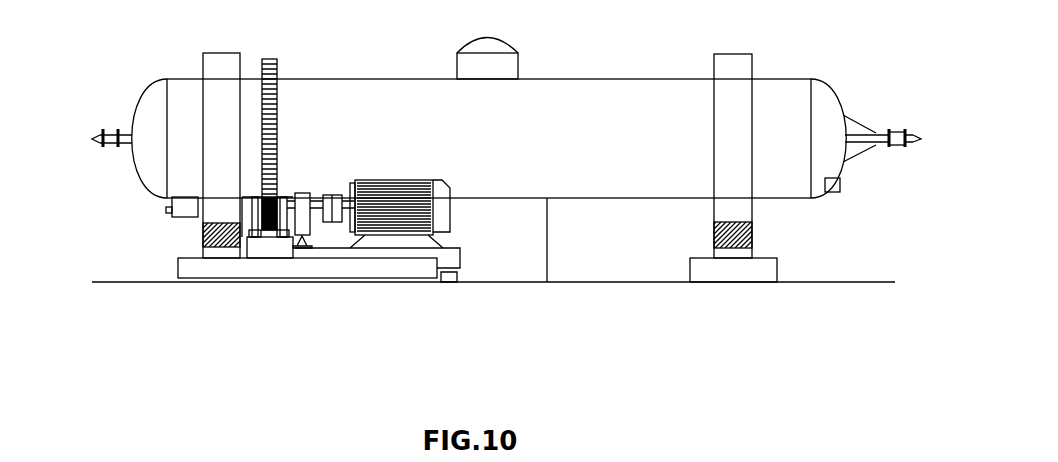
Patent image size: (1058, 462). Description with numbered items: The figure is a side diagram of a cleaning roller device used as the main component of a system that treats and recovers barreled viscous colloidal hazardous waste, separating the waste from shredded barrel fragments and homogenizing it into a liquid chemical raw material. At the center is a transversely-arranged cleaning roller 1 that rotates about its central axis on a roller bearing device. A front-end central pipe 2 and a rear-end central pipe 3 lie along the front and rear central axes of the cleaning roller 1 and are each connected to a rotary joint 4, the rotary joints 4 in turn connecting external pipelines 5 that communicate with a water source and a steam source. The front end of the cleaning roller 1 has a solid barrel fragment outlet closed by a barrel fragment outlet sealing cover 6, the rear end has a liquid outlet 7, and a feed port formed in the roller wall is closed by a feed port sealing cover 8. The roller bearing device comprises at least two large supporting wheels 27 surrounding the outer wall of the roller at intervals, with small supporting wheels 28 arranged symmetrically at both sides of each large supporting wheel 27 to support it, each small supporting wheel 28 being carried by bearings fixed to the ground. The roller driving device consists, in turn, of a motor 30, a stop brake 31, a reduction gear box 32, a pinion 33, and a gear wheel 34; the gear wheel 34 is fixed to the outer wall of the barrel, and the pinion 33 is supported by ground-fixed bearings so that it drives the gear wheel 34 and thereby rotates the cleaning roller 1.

The cleaning roller 1 is at (535, 163).
The front-end central pipe 2 is at (868, 134).
The rear-end central pipe 3 is at (118, 129).
The rotary joint 4 is at (103, 129).
The external pipeline 5 is at (95, 133).
The barrel fragment outlet sealing cover 6 is at (838, 185).
The liquid outlet 7 is at (172, 210).
The feed port sealing cover 8 is at (488, 45).
The large supporting wheel 27 is at (223, 115).
The small supporting wheel 28 is at (223, 248).
The motor 30 is at (397, 207).
The stop brake 31 is at (337, 222).
The reduction gear box 32 is at (303, 215).
The pinion 33 is at (268, 232).
The gear wheel 34 is at (277, 113).